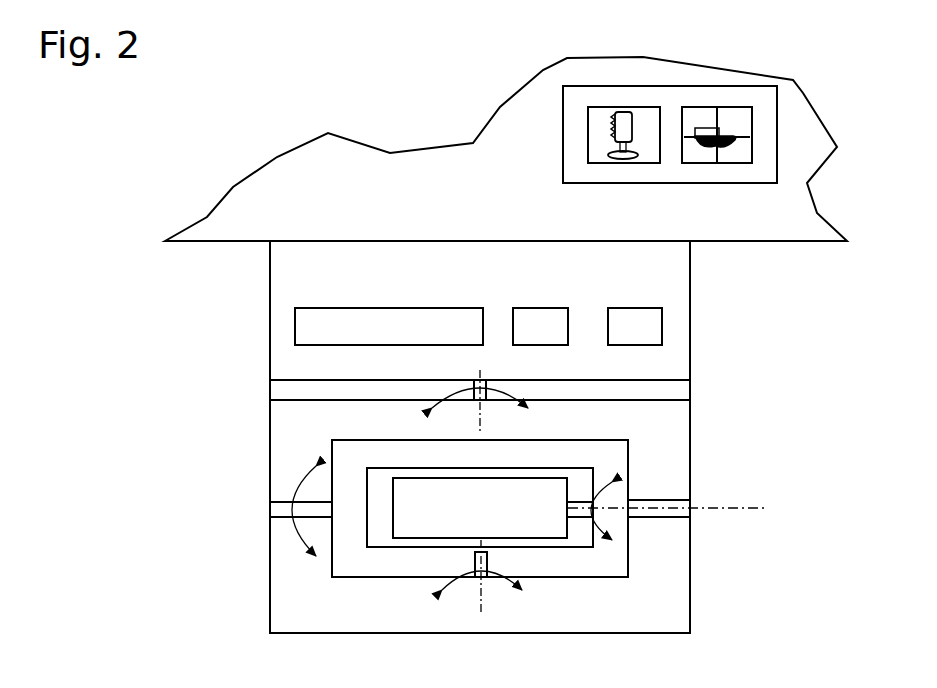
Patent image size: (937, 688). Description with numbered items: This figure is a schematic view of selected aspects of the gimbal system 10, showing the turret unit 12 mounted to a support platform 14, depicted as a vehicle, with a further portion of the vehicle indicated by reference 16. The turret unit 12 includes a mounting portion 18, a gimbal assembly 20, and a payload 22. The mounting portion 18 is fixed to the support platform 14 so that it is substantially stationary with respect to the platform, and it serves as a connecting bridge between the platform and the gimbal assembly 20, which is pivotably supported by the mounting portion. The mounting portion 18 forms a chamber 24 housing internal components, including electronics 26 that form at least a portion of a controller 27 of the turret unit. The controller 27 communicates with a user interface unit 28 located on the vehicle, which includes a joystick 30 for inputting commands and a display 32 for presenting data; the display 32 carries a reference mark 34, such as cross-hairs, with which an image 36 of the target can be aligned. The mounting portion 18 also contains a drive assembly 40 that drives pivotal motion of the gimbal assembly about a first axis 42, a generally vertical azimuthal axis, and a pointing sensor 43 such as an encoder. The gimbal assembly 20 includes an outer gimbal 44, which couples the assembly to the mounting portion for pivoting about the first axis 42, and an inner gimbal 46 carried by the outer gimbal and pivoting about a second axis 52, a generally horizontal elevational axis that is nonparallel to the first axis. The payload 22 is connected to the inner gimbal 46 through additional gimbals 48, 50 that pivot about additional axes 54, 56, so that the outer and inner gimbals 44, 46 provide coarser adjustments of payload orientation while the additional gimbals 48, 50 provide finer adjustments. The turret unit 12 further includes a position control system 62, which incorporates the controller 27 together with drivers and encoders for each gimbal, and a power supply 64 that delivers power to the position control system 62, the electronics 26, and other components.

The system 10 is at (66, 205).
The turret unit 12 is at (128, 302).
The support platform 14 is at (156, 187).
The vehicle exterior surface 16 is at (159, 225).
The mounting portion 18 is at (224, 291).
The gimbal assembly 20 is at (227, 442).
The payload 22 is at (404, 467).
The chamber 24 is at (659, 256).
The electronics 26 is at (389, 326).
The controller 27 is at (328, 268).
The user interface unit 28 is at (737, 84).
The joystick 30 is at (627, 112).
The display 32 is at (701, 108).
The reference mark 34 is at (733, 130).
The image 36 is at (731, 147).
The drive assembly 40 is at (540, 326).
The first axis 42 is at (477, 418).
The pointing sensor 43 is at (635, 326).
The outer gimbal 44 is at (270, 463).
The inner gimbal 46 is at (578, 440).
The additional gimbal 48 is at (572, 548).
The additional gimbal 50 is at (510, 478).
The second axis 52 is at (720, 510).
The additional axis 54 is at (490, 600).
The additional axis 56 is at (618, 522).
The position control system 62 is at (297, 241).
The power supply 64 is at (338, 237).